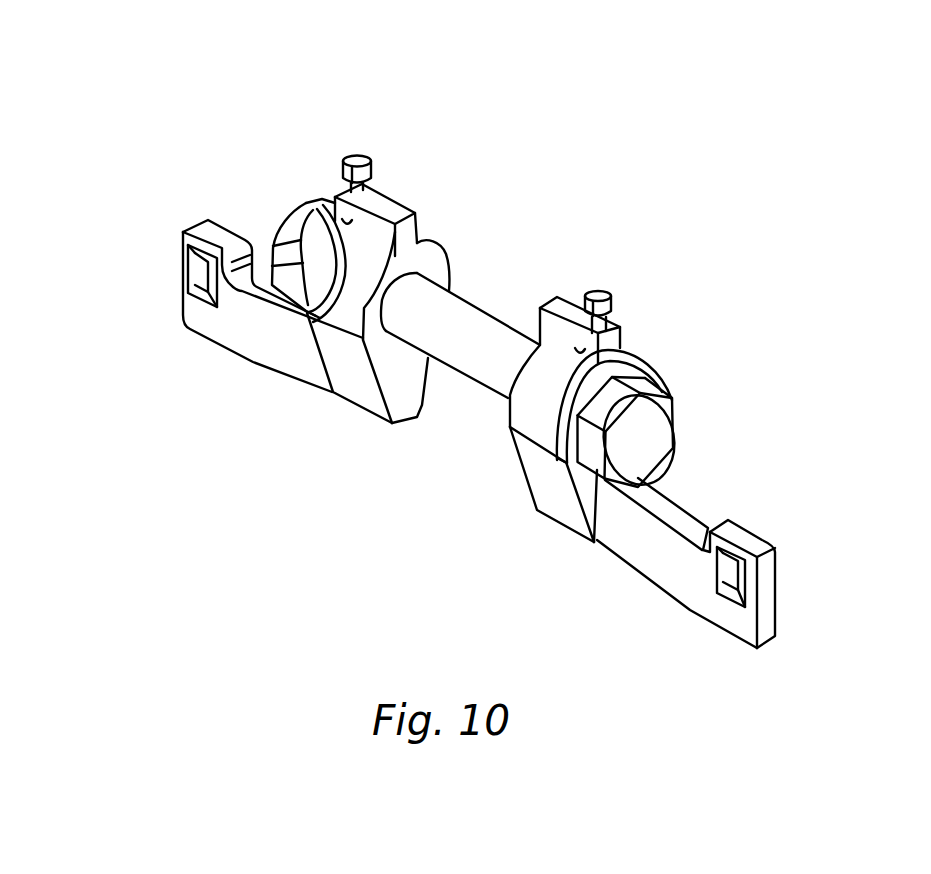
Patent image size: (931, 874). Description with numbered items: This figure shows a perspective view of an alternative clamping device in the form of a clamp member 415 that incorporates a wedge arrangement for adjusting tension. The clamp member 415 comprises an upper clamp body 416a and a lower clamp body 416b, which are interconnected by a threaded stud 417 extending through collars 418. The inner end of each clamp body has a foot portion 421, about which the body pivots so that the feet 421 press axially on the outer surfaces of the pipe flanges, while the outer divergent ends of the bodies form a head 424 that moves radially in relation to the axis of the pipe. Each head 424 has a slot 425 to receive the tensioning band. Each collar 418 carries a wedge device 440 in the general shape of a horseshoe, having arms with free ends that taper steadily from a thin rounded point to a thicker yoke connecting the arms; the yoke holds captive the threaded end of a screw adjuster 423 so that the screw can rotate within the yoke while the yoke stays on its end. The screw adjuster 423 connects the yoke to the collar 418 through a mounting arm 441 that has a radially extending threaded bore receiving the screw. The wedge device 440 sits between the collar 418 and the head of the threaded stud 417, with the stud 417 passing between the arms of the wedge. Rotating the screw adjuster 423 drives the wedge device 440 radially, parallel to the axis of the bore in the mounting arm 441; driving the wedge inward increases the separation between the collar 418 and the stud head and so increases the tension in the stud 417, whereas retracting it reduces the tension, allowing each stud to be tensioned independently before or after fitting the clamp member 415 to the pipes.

The clamp member 415 is at (366, 93).
The upper clamp body 416a is at (438, 239).
The lower clamp body 416b is at (614, 561).
The threaded stud 417 is at (467, 316).
The collar 418 is at (347, 306).
The foot portion 421 is at (400, 407).
The screw adjuster 423 is at (372, 171).
The head 424 is at (180, 357).
The slot 425 is at (200, 268).
The wedge device 440 is at (330, 245).
The mounting arm 441 is at (397, 200).